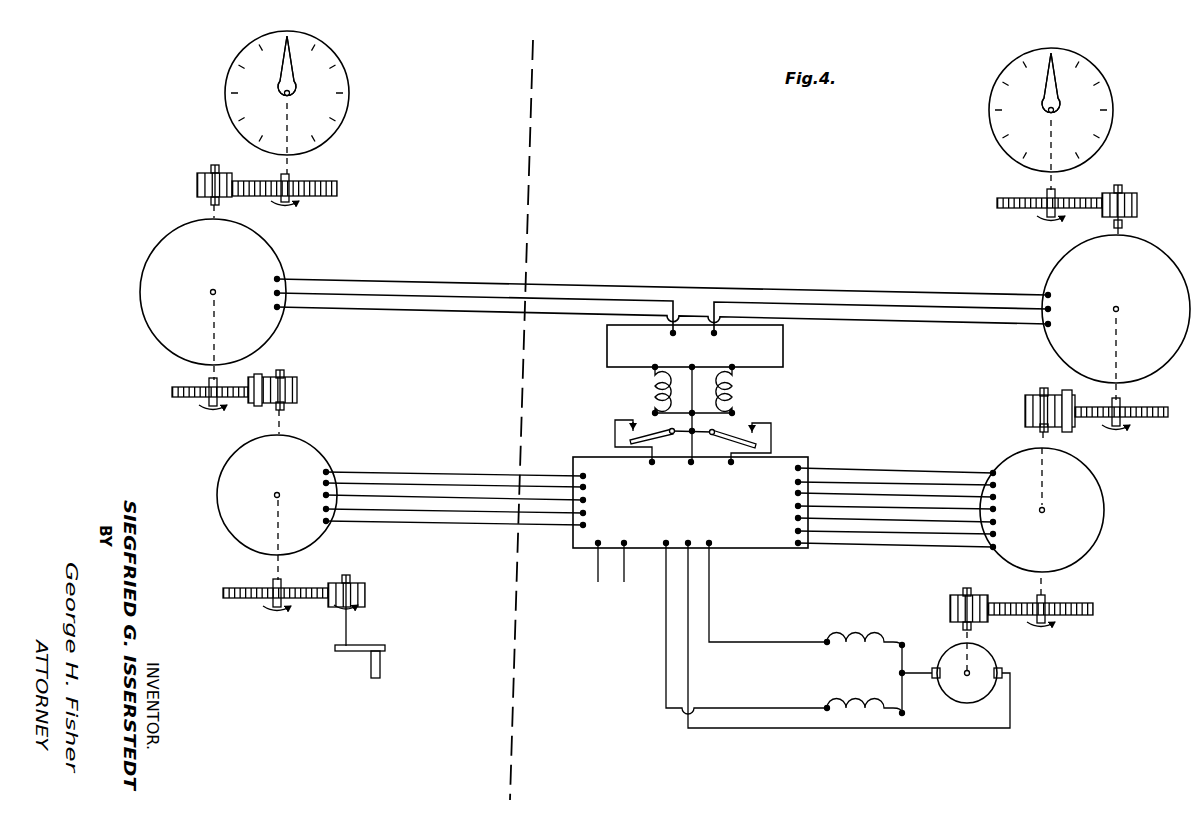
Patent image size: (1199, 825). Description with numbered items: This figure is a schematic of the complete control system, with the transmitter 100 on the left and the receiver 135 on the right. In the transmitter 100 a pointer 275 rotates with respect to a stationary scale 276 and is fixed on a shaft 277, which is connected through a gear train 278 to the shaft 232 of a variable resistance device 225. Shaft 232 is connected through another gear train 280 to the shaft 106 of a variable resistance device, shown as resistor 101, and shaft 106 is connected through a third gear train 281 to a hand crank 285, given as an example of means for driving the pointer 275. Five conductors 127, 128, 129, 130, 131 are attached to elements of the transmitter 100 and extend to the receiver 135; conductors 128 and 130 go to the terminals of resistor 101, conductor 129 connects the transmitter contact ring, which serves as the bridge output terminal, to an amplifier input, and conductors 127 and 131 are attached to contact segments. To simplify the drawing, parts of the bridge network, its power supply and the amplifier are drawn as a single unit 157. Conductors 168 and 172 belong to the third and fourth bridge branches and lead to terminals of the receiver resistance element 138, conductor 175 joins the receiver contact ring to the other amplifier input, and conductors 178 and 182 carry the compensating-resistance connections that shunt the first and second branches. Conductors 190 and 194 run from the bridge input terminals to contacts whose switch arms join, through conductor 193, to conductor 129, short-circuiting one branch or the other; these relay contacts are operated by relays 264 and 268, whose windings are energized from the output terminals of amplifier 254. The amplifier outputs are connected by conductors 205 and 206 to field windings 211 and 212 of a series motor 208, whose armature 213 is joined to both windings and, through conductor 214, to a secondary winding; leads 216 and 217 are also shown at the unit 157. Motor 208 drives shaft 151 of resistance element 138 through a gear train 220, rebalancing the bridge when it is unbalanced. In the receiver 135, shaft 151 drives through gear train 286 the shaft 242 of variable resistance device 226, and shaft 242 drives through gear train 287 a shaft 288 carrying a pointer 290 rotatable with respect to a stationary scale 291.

The transmitter 100 is at (498, 98).
The receiver 135 is at (652, 104).
The resistor 101 is at (318, 447).
The shaft 106 is at (285, 412).
The conductor 127 is at (429, 472).
The conductor 128 is at (439, 484).
The conductor 129 is at (448, 497).
The conductor 130 is at (456, 509).
The conductor 131 is at (464, 522).
The resistance element 138 is at (1104, 512).
The shaft 151 is at (1042, 598).
The unit 157 is at (690, 502).
The conductor 168 is at (941, 494).
The conductor 172 is at (952, 518).
The conductor 175 is at (947, 506).
The conductor 178 is at (958, 531).
The conductor 182 is at (934, 482).
The conductor 190 is at (615, 438).
The conductor 193 is at (692, 448).
The conductor 194 is at (771, 438).
The conductor 205 is at (665, 604).
The conductor 206 is at (710, 601).
The series motor 208 is at (1000, 658).
The field winding 211 is at (861, 640).
The field winding 212 is at (878, 704).
The armature 213 is at (986, 686).
The conductor 214 is at (830, 730).
The power lead 216 is at (596, 573).
The power lead 217 is at (624, 578).
The gear train 220 is at (1000, 626).
The variable resistance device 225 is at (278, 252).
The variable resistance device 226 is at (1054, 351).
The shaft 232 is at (211, 204).
The shaft 242 is at (1114, 224).
The amplifier 254 is at (785, 345).
The relay 264 is at (761, 405).
The relay 268 is at (628, 400).
The pointer 275 is at (294, 68).
The stationary scale 276 is at (349, 84).
The shaft 277 is at (290, 179).
The gear train 278 is at (225, 164).
The gear train 280 is at (294, 373).
The gear train 281 is at (352, 583).
The hand crank 285 is at (354, 653).
The gear train 286 is at (1088, 430).
The gear train 287 is at (1098, 180).
The shaft 288 is at (1044, 194).
The pointer 290 is at (1058, 86).
The stationary scale 291 is at (1113, 99).